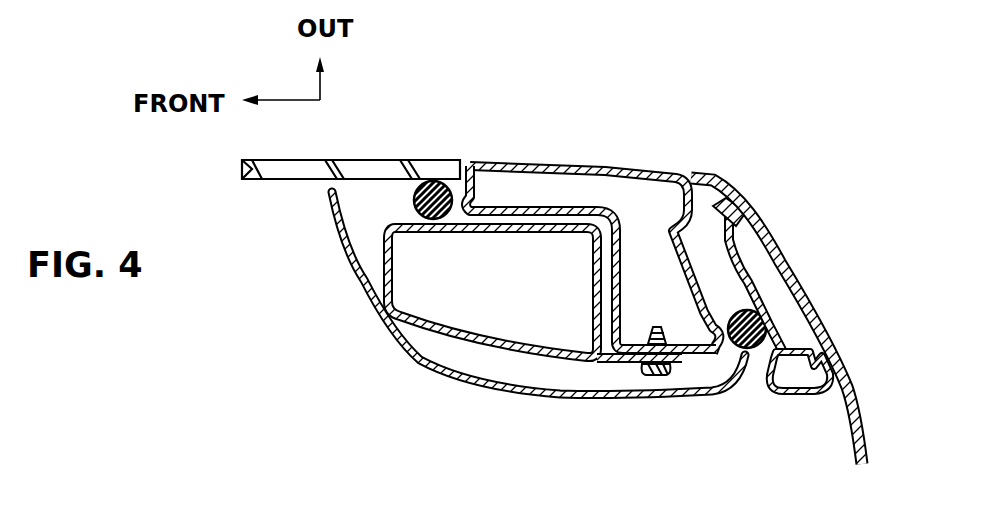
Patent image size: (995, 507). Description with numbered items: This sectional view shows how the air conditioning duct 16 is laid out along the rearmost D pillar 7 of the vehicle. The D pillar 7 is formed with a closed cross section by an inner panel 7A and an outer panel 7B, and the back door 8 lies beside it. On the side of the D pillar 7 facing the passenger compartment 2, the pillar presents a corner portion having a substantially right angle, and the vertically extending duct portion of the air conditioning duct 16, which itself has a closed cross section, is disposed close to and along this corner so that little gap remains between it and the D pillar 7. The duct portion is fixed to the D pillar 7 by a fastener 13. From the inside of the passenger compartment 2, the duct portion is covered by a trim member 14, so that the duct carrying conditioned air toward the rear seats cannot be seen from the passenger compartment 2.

The passenger compartment 2 is at (318, 418).
The D pillar 7 is at (592, 236).
The inner panel 7A is at (500, 207).
The outer panel 7B is at (618, 166).
The back door 8 is at (860, 407).
The fastener 13 is at (653, 377).
The trim member 14 is at (398, 353).
The air conditioning duct 16 is at (535, 340).